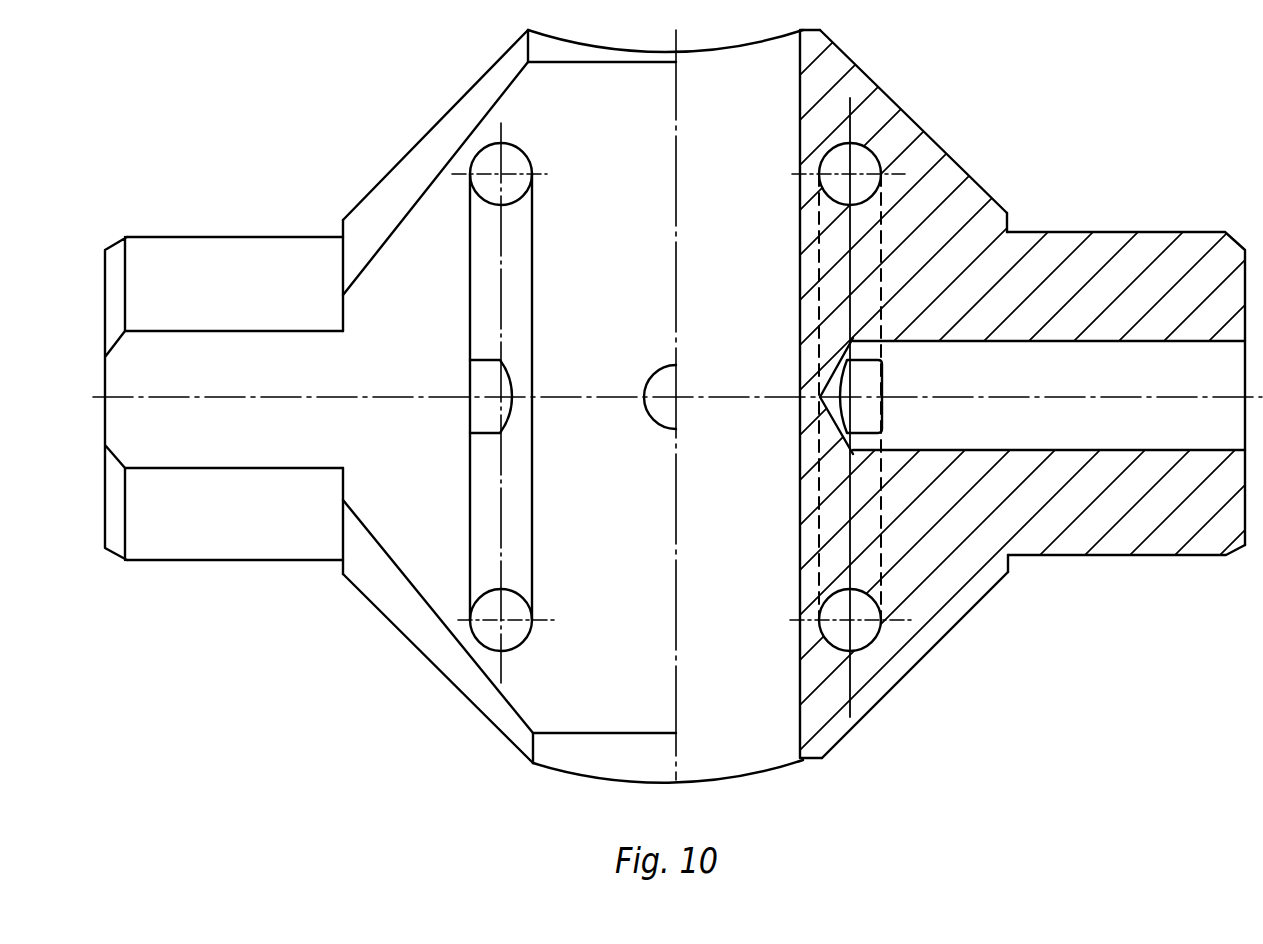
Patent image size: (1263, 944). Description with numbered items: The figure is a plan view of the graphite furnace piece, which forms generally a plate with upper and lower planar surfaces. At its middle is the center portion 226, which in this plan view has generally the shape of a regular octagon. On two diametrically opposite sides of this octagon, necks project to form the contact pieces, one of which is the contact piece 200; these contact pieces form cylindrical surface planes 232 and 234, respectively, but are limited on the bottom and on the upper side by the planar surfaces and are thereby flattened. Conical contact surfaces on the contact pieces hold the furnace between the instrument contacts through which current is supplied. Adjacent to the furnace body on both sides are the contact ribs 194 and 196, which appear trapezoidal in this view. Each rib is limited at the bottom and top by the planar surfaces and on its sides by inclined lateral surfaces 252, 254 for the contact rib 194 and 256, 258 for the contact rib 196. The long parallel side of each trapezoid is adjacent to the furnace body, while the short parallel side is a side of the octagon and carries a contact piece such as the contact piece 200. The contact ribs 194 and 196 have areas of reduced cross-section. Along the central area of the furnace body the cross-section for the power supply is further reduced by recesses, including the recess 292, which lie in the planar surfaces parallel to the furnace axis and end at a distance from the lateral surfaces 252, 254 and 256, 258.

The contact rib 194 is at (423, 550).
The contact rib 196 is at (870, 663).
The contact piece 200 is at (1083, 520).
The center portion 226 is at (935, 126).
The cylindrical surface plane 232 is at (223, 253).
The cylindrical surface plane 234 is at (1128, 232).
The inclined lateral surface 252 is at (425, 153).
The inclined lateral surface 254 is at (438, 648).
The inclined lateral surface 256 is at (975, 177).
The inclined lateral surface 258 is at (915, 670).
The recess 292 is at (515, 550).